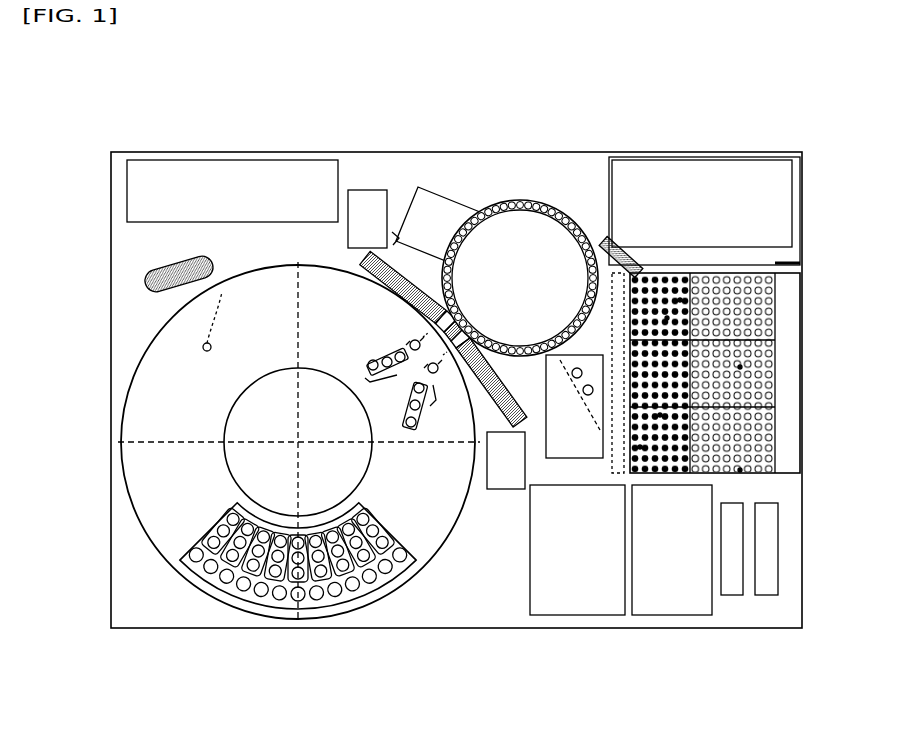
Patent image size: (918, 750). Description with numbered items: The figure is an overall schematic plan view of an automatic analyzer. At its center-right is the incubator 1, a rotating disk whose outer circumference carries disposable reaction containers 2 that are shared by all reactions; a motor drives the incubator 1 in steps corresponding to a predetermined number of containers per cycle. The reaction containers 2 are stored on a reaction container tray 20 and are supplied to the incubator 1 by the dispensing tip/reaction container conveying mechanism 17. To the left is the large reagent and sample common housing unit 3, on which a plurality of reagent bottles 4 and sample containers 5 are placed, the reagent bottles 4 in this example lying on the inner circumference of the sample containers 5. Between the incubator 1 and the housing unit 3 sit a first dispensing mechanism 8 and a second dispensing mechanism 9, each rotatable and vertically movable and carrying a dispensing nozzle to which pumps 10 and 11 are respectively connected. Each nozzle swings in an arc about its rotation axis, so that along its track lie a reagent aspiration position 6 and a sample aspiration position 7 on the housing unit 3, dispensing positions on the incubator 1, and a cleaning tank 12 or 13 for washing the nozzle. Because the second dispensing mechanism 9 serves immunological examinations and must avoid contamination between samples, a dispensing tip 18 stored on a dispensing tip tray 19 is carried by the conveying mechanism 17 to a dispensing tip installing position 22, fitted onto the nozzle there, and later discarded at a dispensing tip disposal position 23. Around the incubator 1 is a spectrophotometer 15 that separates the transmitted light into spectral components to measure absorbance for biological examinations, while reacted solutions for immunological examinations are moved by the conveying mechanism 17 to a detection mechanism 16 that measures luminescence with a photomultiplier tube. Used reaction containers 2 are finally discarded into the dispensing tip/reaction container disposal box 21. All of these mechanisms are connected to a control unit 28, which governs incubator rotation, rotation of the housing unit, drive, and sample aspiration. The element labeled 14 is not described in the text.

The incubator 1 is at (523, 243).
The reaction container 2 is at (556, 203).
The reagent and sample common housing unit 3 is at (193, 480).
The reagent bottle 4 is at (240, 545).
The sample container 5 is at (283, 567).
The reagent aspiration position 6 is at (410, 372).
The sample aspiration position 7 is at (407, 343).
The first dispensing mechanism 8 is at (372, 262).
The second dispensing mechanism 9 is at (520, 485).
The pump 10 is at (363, 215).
The pump 11 is at (520, 422).
The cleaning tank 12 is at (447, 297).
The cleaning tank 13 is at (455, 332).
The sample arm 14 is at (187, 277).
The spectrophotometer 15 is at (458, 215).
The detection mechanism 16 is at (678, 187).
The dispensing tip/reaction container conveying mechanism 17 is at (627, 242).
The dispensing tip 18 is at (680, 300).
The dispensing tip tray 19 is at (667, 318).
The reaction container tray 20 is at (740, 367).
The dispensing tip/reaction container disposal box 21 is at (740, 470).
The dispensing tip installing position 22 is at (640, 447).
The dispensing tip disposal position 23 is at (660, 415).
The control unit 28 is at (176, 205).